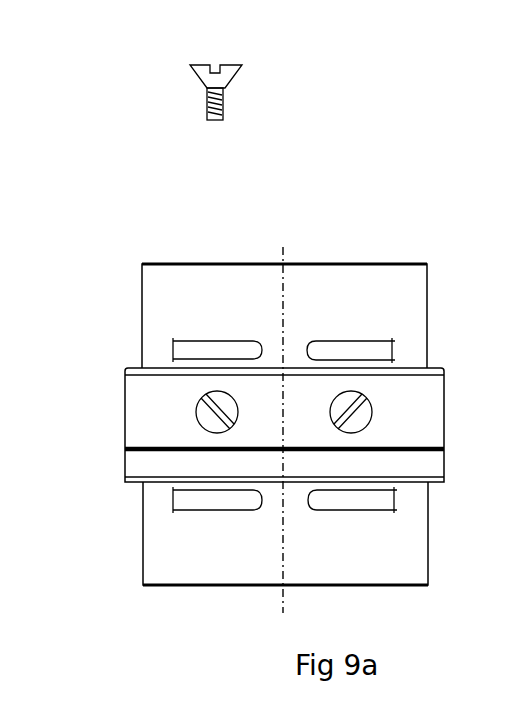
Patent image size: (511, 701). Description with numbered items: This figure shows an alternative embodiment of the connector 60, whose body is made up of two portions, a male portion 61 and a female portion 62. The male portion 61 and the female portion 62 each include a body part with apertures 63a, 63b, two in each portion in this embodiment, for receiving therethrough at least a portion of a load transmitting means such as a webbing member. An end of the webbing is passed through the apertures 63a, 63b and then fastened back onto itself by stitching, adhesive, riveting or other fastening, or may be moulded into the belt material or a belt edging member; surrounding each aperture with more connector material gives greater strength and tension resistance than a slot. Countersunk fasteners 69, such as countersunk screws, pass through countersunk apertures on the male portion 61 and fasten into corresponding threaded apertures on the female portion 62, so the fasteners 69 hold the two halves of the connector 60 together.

The connector 60 is at (252, 232).
The male portion 61 is at (142, 264).
The female portion 62 is at (143, 586).
The aperture 63a is at (188, 349).
The aperture 63b is at (190, 498).
The countersunk fastener 69 is at (225, 96).